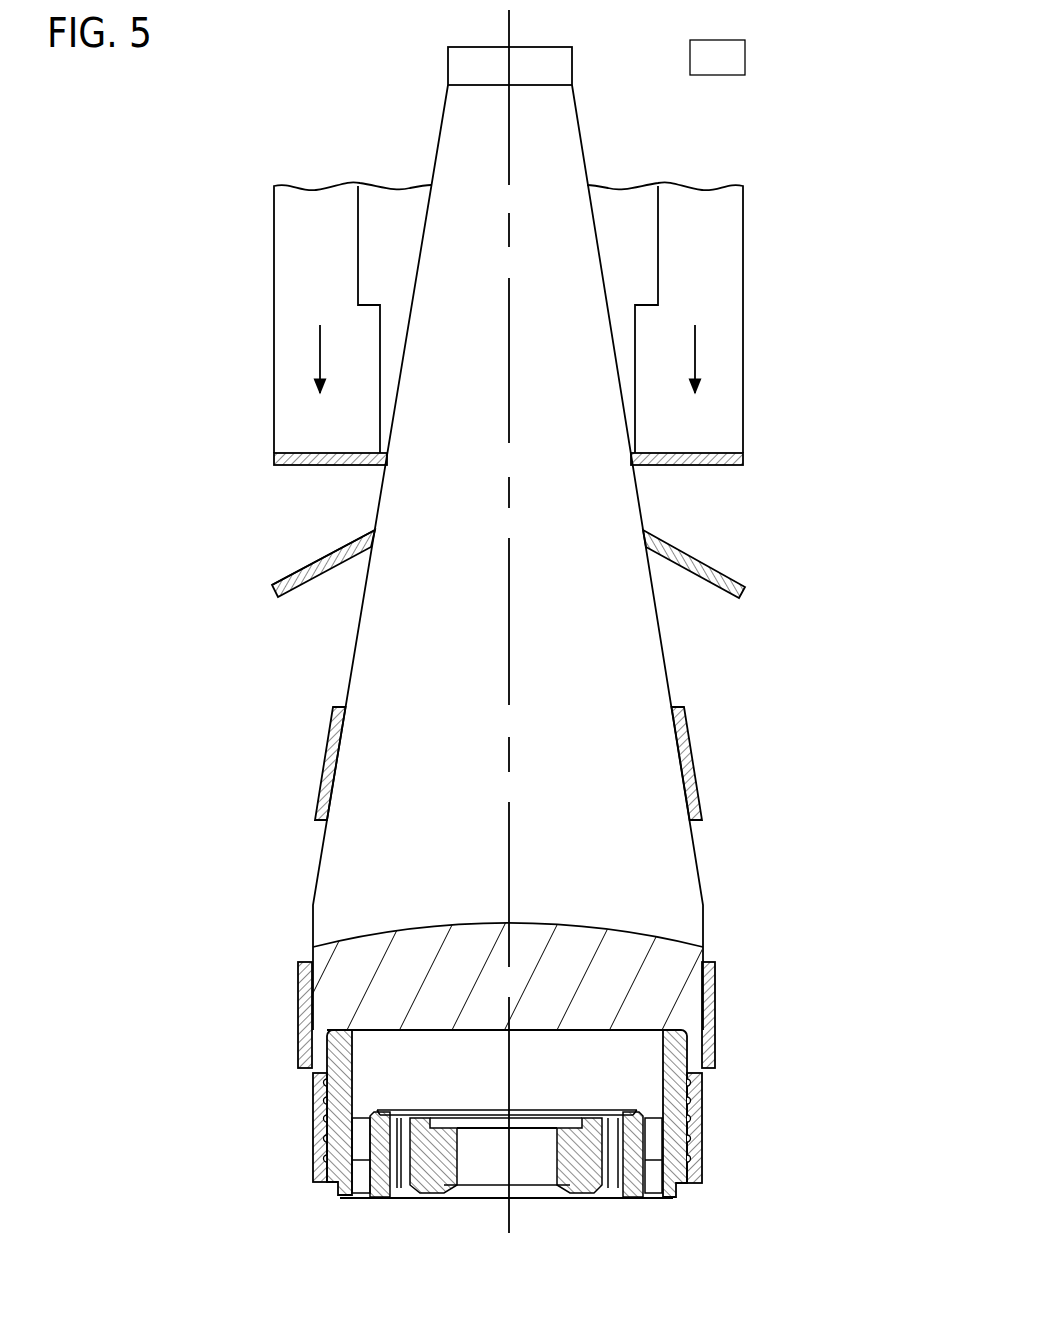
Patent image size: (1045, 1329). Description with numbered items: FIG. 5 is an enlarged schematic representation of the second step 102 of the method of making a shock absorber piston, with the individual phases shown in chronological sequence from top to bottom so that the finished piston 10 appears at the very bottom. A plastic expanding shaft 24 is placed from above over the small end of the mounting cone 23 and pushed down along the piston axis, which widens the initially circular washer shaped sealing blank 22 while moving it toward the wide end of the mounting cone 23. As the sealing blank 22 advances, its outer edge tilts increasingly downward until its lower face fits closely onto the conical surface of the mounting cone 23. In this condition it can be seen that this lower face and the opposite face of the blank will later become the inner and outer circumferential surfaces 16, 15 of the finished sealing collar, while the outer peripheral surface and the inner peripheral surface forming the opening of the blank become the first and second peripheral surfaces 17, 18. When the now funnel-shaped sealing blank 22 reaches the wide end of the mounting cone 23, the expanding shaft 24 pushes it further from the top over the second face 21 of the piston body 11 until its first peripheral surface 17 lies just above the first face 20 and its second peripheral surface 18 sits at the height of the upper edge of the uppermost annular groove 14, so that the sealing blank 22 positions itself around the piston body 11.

The piston 10 is at (744, 1189).
The piston body 11 is at (583, 1203).
The annular grooves 14 is at (705, 1093).
The outer circumferential surface 15 is at (315, 560).
The inner circumferential surface 16 is at (302, 585).
The first peripheral surface 17 is at (270, 461).
The second peripheral surface 18 is at (337, 707).
The first face 20 is at (485, 1200).
The second face 21 is at (383, 1028).
The sealing blank 22 is at (715, 470).
The mounting cone 23 is at (437, 140).
The expanding shaft 24 is at (270, 240).
The second step 102 is at (717, 57).